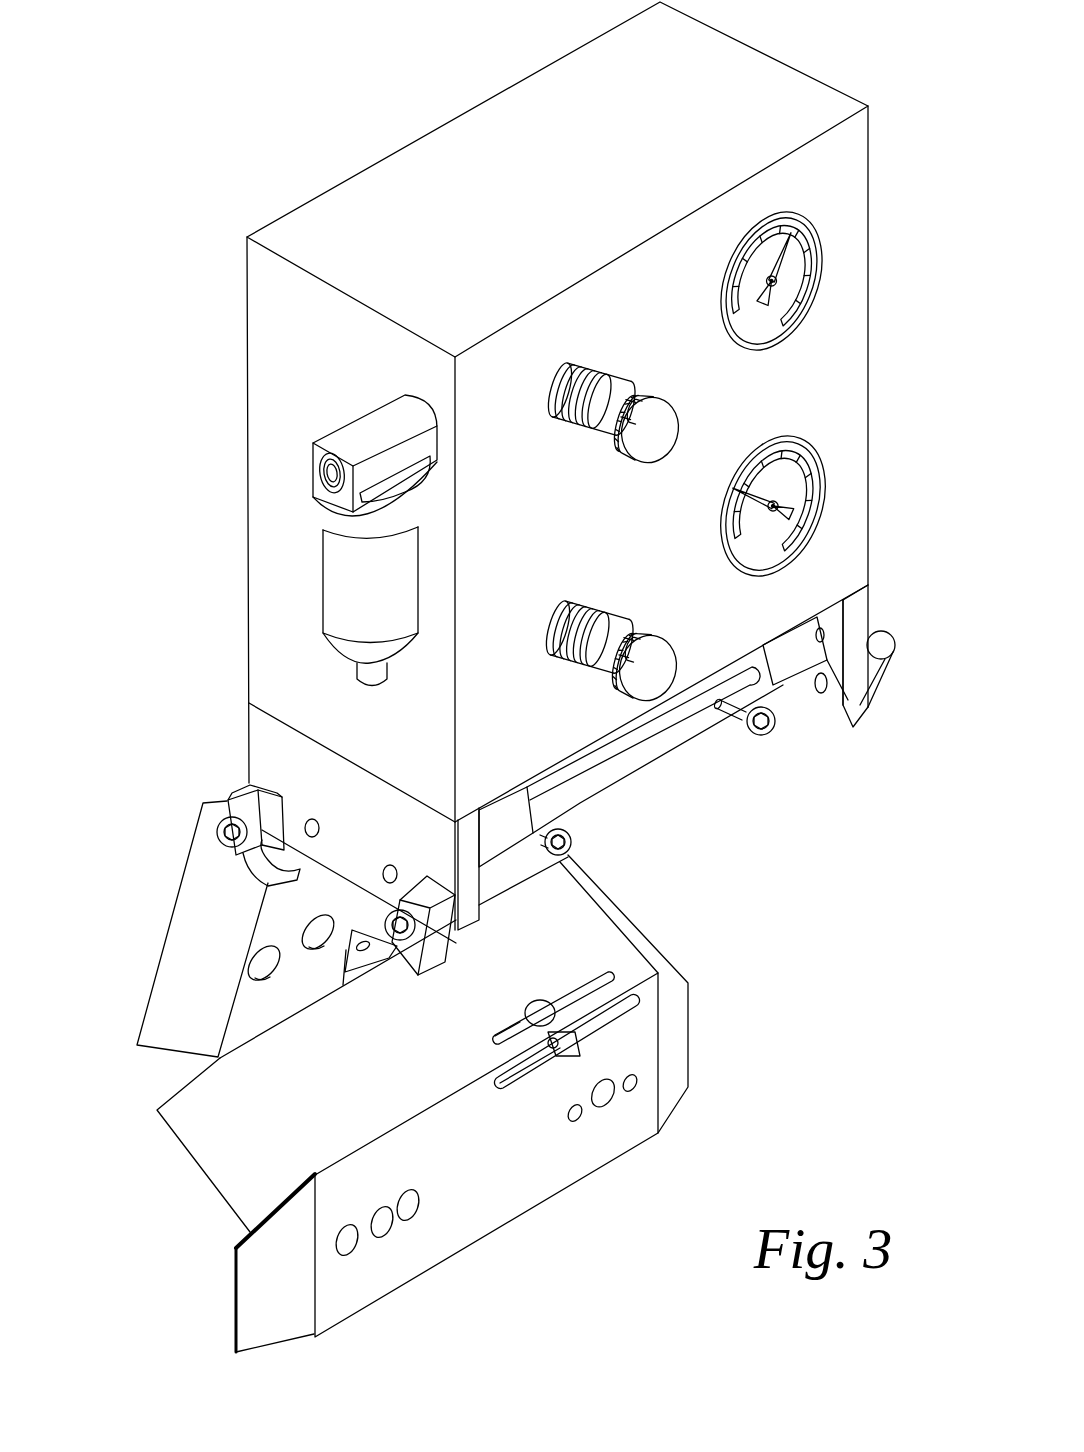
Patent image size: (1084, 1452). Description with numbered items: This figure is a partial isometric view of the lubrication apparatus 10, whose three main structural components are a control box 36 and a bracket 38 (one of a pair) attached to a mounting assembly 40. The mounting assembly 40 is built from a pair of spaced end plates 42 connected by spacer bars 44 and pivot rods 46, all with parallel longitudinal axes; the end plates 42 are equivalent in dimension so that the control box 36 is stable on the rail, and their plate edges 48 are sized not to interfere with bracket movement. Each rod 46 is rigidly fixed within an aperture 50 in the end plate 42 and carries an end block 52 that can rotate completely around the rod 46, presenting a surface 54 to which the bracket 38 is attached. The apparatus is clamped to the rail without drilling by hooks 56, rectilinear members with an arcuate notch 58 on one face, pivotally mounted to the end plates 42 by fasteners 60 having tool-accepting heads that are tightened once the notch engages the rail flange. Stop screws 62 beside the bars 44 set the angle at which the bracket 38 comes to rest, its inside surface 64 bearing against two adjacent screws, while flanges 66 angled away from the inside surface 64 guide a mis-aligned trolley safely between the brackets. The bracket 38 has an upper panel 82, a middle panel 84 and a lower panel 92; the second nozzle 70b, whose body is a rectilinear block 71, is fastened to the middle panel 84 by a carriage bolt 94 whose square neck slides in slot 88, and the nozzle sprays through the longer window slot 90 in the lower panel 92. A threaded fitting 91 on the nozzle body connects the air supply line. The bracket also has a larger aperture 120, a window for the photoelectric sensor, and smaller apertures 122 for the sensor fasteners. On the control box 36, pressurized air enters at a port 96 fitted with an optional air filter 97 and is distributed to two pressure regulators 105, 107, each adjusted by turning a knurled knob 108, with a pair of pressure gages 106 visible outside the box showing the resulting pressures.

The lubrication apparatus 10 is at (393, 126).
The control box 36 is at (768, 87).
The bracket 38 is at (450, 1076).
The mounting assembly 40 is at (233, 718).
The end plate 42 is at (480, 902).
The bar 44 is at (635, 766).
The pivot rod 46 is at (320, 828).
The plate edge 48 is at (466, 924).
The aperture 50 is at (306, 826).
The end block 52 is at (507, 848).
The surface 54 is at (653, 742).
The hook 56 is at (262, 872).
The arcuate notch 58 is at (292, 858).
The fastener 60 is at (243, 790).
The stop screw 62 is at (752, 737).
The inside surface 64 is at (294, 949).
The flange 66 is at (193, 1027).
The second nozzle 70b is at (579, 1060).
The rectilinear block 71 is at (497, 1038).
The upper panel 82 is at (270, 1004).
The middle panel 84 is at (592, 925).
The slot 88 is at (598, 982).
The window slot 90 is at (618, 1013).
The threaded fitting 91 is at (520, 1087).
The lower panel 92 is at (487, 1222).
The carriage bolt 94 is at (526, 1010).
The port 96 is at (347, 517).
The air filter 97 is at (355, 610).
The pressure regulator 105 is at (584, 672).
The pressure gage 106 is at (781, 342).
The pressure regulator 107 is at (582, 433).
The knurled knob 108 is at (632, 470).
The larger aperture 120 is at (610, 1102).
The smaller aperture 122 is at (638, 1083).